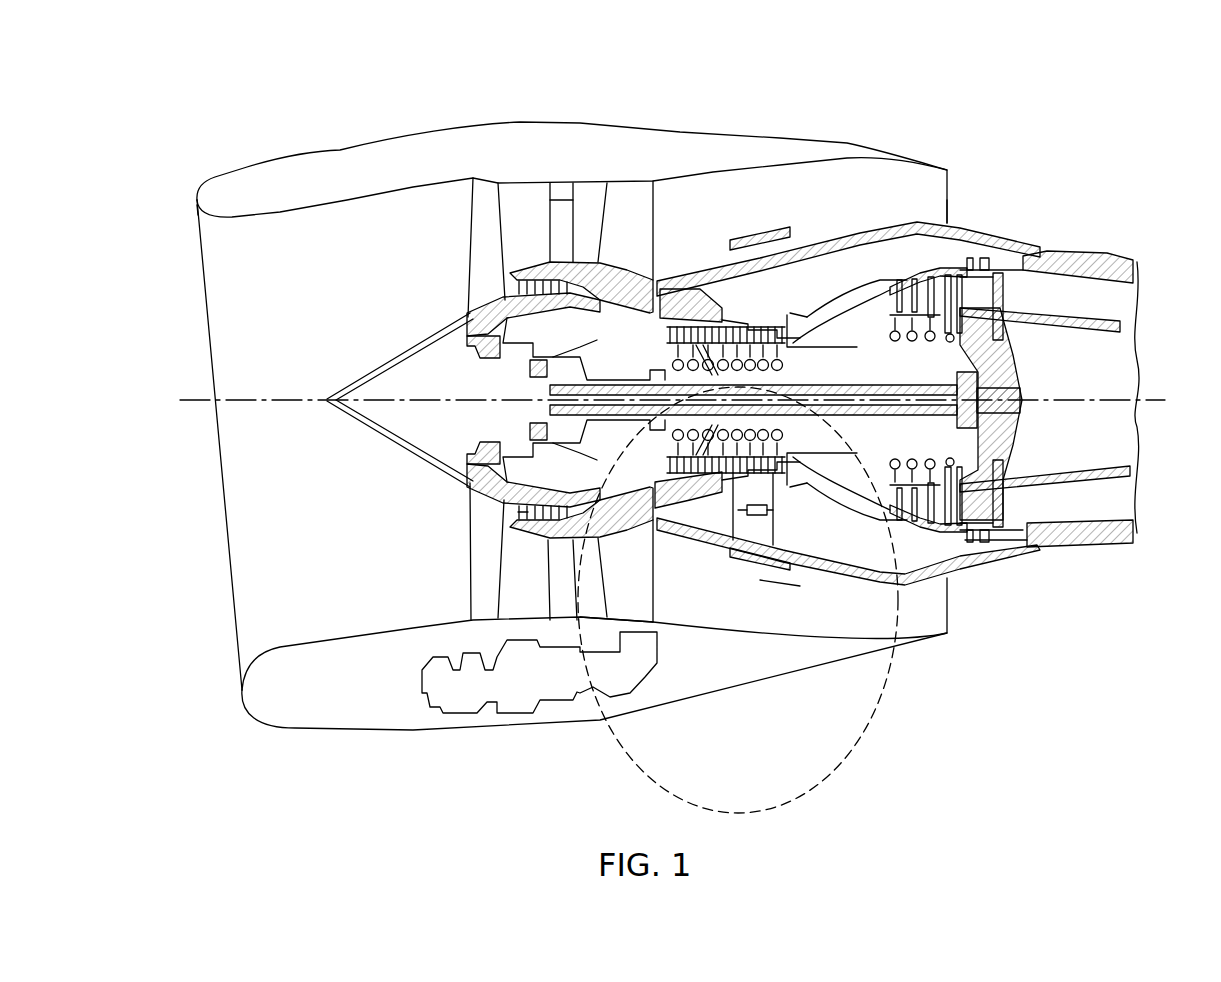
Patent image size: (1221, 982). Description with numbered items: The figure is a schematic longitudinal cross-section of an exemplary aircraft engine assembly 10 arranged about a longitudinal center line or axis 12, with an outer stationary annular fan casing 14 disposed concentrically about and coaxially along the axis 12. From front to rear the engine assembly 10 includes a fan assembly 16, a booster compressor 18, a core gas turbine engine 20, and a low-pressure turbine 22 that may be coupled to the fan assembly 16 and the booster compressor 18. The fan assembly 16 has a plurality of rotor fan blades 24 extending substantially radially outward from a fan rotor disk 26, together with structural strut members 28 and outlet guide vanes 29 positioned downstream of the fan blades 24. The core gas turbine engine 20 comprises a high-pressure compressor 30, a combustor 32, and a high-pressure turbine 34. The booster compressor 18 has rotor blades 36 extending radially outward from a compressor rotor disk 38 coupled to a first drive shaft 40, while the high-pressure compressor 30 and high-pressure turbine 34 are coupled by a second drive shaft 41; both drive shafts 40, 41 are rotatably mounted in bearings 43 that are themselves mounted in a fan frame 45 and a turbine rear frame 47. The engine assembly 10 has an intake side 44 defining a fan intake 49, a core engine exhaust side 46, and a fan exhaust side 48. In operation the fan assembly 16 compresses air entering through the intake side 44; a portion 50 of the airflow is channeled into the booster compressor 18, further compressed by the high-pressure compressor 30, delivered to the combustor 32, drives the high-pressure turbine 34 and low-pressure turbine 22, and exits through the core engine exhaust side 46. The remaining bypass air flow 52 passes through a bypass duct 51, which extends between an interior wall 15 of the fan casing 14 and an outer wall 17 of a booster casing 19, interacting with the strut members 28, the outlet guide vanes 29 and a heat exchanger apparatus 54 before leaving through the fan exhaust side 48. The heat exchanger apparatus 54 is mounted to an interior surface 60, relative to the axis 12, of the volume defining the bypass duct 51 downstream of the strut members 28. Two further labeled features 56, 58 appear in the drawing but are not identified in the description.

The aircraft engine assembly 10 is at (1097, 137).
The longitudinal center line or axis 12 is at (265, 390).
The outer stationary annular fan casing 14 is at (513, 118).
The interior wall of the fan casing 15 is at (690, 133).
The fan assembly 16 is at (440, 218).
The outer wall of the booster casing 17 is at (683, 260).
The booster compressor 18 is at (514, 545).
The booster casing 19 is at (690, 533).
The core gas turbine engine 20 is at (802, 310).
The low-pressure turbine 22 is at (950, 552).
The rotor fan blades 24 is at (482, 552).
The fan rotor disk 26 is at (480, 437).
The structural strut members 28 is at (560, 190).
The outlet guide vanes 29 is at (652, 178).
The high-pressure compressor 30 is at (712, 483).
The combustor 32 is at (829, 485).
The high-pressure turbine 34 is at (873, 503).
The rotor blades 36 is at (547, 503).
The compressor rotor disk 38 is at (520, 326).
The first drive shaft 40 is at (585, 370).
The second drive shaft 41 is at (1010, 418).
The bearings 43 is at (1015, 380).
The intake side 44 is at (165, 302).
The fan frame 45 is at (1028, 437).
The core engine exhaust side 46 is at (1140, 304).
The turbine rear frame 47 is at (1100, 250).
The fan exhaust side 48 is at (972, 192).
The fan intake 49 is at (608, 250).
The compressed airflow portion 50 is at (510, 512).
The bypass duct 51 is at (786, 215).
The bypass air flow 52 is at (515, 228).
The heat exchanger apparatus 54 is at (803, 594).
The heat exchanger 56 is at (757, 570).
The spinner 58 is at (449, 386).
The interior surface 60 is at (857, 230).